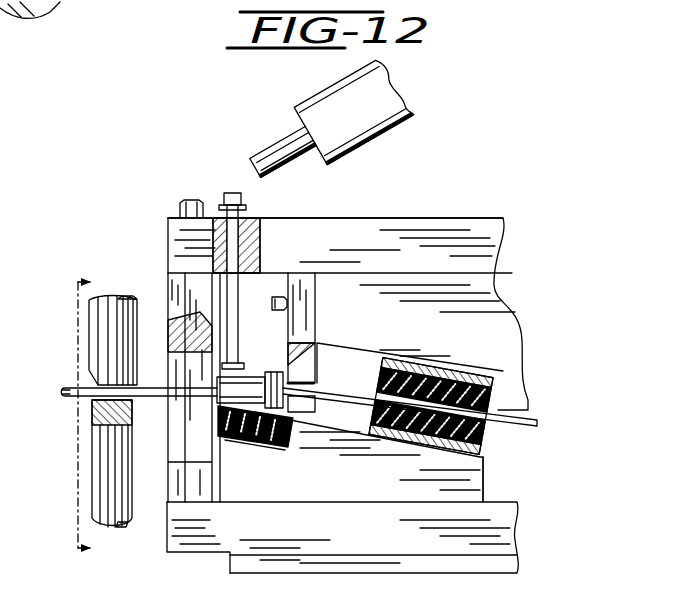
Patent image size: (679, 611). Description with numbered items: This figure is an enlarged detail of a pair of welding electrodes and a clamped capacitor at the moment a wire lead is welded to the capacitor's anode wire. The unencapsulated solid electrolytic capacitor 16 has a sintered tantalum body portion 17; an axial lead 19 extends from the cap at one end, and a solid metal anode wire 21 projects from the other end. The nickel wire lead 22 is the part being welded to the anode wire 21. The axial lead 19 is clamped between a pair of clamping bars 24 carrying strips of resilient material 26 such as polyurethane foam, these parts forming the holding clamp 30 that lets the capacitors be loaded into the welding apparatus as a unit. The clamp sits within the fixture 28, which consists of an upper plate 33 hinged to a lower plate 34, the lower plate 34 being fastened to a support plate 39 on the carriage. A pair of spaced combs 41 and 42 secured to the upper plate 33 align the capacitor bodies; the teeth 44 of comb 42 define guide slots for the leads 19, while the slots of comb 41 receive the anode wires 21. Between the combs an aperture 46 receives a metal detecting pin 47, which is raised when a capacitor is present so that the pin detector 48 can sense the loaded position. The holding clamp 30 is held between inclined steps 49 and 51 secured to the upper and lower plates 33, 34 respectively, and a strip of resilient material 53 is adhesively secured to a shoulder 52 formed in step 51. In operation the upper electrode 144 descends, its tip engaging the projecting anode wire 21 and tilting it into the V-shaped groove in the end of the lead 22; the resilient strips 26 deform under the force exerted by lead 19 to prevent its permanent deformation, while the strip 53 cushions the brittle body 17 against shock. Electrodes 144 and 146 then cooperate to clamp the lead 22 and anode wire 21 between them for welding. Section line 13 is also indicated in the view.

The section line 13 is at (113, 410).
The solid electrolytic capacitor 16 is at (256, 373).
The body portion 17 is at (270, 303).
The axial lead 19 is at (518, 426).
The anode wire 21 is at (155, 397).
The wire lead 22 is at (80, 398).
The clamping bars 24 is at (413, 370).
The strips of resilient material 26 is at (452, 377).
The fixture 28 is at (444, 198).
The holding clamp 30 is at (394, 355).
The upper plate 33 is at (380, 223).
The lower plate 34 is at (222, 556).
The support plate 39 is at (422, 566).
The comb 41 is at (168, 283).
The comb 42 is at (316, 302).
The teeth 44 is at (315, 404).
The aperture 46 is at (247, 219).
The metal detecting pin 47 is at (232, 192).
The pin detector 48 is at (418, 97).
The inclined step 49 is at (328, 366).
The inclined step 51 is at (485, 492).
The shoulder 52 is at (280, 447).
The strip of resilient material 53 is at (236, 446).
The upper welding electrode 144 is at (93, 347).
The lower welding electrode 146 is at (97, 449).